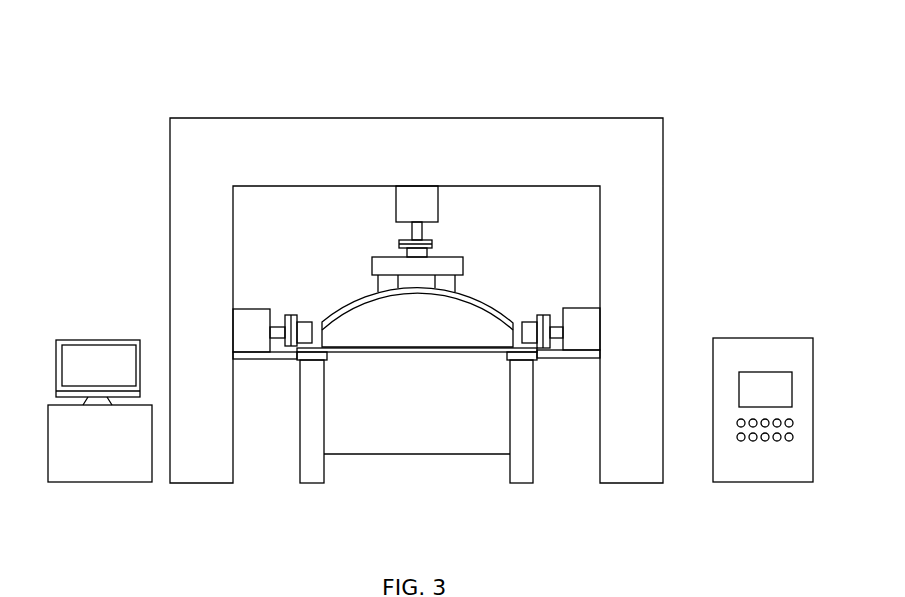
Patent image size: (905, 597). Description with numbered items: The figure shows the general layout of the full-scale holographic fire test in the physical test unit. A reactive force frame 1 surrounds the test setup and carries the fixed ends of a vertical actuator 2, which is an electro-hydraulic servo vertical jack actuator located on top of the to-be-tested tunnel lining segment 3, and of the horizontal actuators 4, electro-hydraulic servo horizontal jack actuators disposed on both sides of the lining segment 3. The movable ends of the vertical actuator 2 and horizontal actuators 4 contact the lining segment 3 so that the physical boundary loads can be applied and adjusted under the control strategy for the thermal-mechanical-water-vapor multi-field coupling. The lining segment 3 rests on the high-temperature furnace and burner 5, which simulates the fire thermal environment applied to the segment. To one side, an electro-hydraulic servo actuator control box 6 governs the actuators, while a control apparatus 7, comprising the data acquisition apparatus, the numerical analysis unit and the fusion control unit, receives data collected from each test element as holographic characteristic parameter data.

The reactive force frame 1 is at (388, 145).
The vertical actuator 2 is at (437, 235).
The to-be-tested tunnel lining segment 3 is at (482, 302).
The horizontal actuator 4 is at (585, 330).
The high-temperature furnace and burner 5 is at (423, 403).
The electro-hydraulic servo actuator control box 6 is at (737, 357).
The control apparatus 7 is at (103, 365).